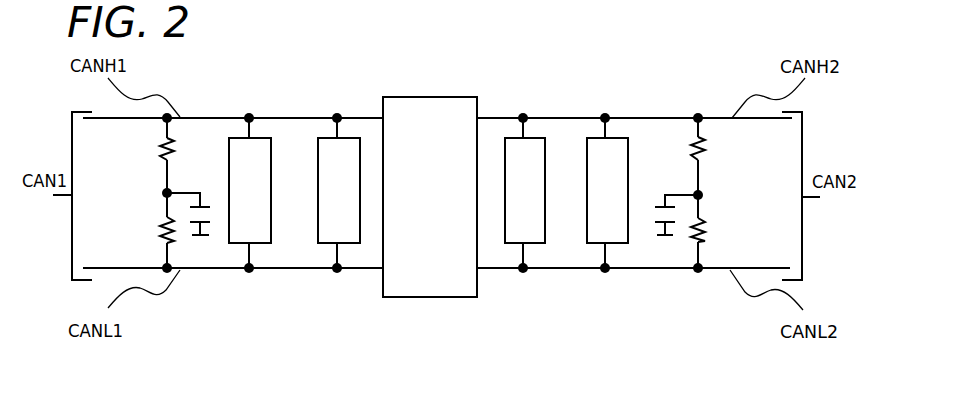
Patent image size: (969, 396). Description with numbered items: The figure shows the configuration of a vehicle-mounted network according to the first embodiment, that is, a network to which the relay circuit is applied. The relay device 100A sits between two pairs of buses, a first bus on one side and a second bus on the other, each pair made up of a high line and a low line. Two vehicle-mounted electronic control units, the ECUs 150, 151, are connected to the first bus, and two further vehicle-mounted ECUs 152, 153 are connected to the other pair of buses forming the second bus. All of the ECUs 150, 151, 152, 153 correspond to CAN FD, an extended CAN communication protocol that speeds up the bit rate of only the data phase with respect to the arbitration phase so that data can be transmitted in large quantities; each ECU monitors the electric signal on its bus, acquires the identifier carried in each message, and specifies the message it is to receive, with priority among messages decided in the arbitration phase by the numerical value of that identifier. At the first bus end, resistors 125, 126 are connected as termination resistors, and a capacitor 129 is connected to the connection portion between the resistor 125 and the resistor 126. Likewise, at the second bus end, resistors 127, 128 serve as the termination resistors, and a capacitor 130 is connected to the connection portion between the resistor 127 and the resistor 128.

The communication device (relay device) 100A is at (398, 97).
The resistor 125 is at (148, 152).
The resistor 126 is at (148, 225).
The resistor 127 is at (717, 157).
The resistor 128 is at (717, 230).
The capacitor 129 is at (207, 232).
The capacitor 130 is at (652, 230).
The vehicle-mounted electronic control unit 150 is at (257, 137).
The vehicle-mounted electronic control unit 151 is at (347, 137).
The vehicle-mounted electronic control unit 152 is at (533, 137).
The vehicle-mounted electronic control unit 153 is at (617, 137).